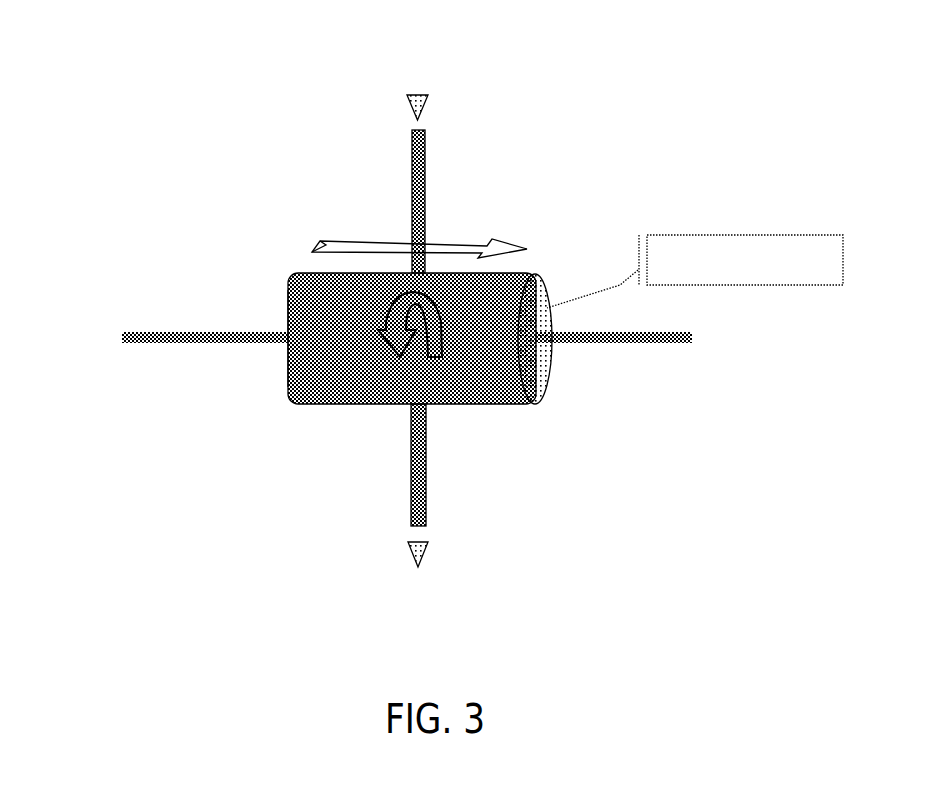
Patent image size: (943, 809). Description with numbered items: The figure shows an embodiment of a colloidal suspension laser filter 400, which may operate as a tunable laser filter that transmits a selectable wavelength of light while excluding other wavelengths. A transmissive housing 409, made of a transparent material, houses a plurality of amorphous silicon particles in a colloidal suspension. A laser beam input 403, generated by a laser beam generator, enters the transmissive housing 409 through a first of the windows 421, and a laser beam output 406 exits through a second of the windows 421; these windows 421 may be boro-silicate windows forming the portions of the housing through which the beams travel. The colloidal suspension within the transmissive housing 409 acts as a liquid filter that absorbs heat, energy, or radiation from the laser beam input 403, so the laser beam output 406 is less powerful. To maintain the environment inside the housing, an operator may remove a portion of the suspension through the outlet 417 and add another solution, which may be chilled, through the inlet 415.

The colloidal suspension laser filter 400 is at (192, 96).
The laser beam input 403 is at (147, 330).
The laser beam output 406 is at (663, 344).
The transmissive housing 409 is at (378, 380).
The inlet 415 is at (412, 155).
The outlet 417 is at (426, 507).
The windows 421 is at (548, 287).